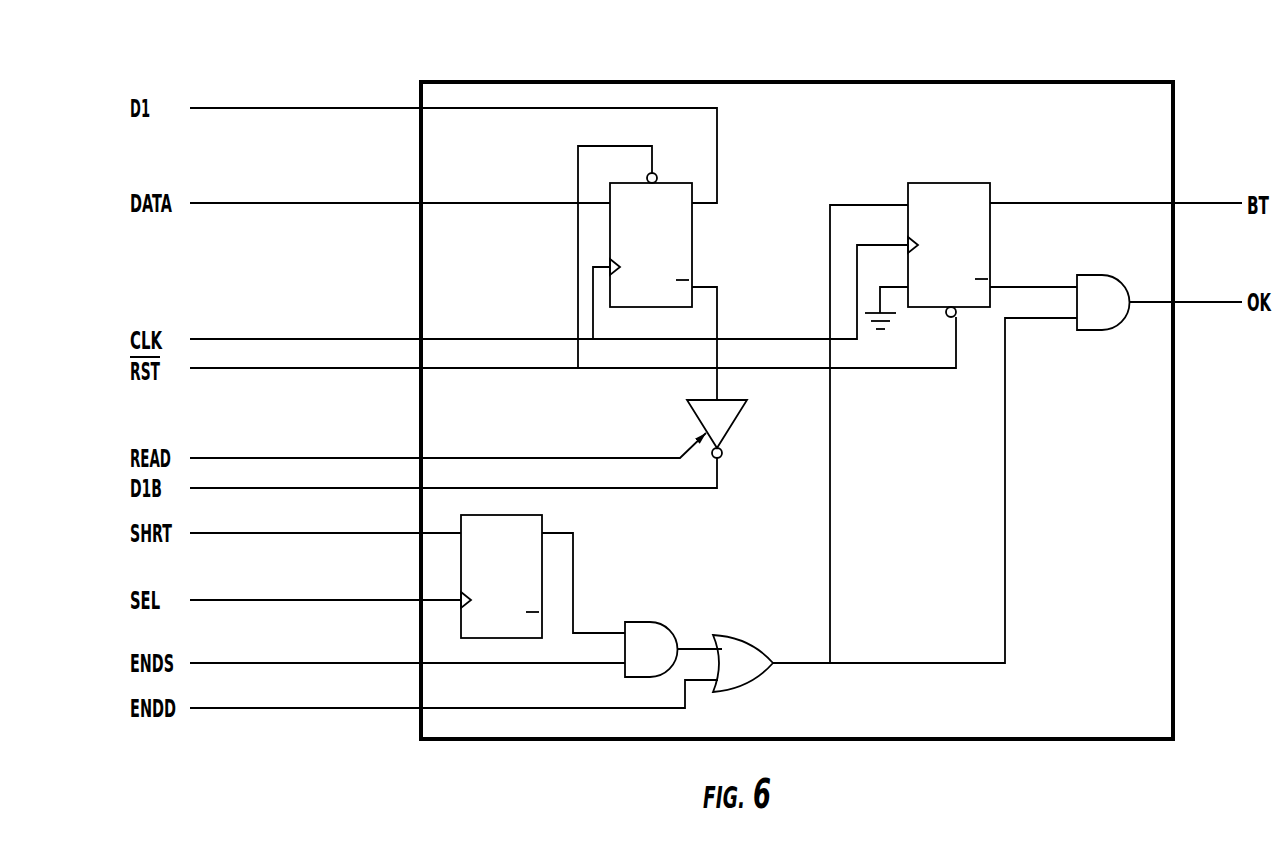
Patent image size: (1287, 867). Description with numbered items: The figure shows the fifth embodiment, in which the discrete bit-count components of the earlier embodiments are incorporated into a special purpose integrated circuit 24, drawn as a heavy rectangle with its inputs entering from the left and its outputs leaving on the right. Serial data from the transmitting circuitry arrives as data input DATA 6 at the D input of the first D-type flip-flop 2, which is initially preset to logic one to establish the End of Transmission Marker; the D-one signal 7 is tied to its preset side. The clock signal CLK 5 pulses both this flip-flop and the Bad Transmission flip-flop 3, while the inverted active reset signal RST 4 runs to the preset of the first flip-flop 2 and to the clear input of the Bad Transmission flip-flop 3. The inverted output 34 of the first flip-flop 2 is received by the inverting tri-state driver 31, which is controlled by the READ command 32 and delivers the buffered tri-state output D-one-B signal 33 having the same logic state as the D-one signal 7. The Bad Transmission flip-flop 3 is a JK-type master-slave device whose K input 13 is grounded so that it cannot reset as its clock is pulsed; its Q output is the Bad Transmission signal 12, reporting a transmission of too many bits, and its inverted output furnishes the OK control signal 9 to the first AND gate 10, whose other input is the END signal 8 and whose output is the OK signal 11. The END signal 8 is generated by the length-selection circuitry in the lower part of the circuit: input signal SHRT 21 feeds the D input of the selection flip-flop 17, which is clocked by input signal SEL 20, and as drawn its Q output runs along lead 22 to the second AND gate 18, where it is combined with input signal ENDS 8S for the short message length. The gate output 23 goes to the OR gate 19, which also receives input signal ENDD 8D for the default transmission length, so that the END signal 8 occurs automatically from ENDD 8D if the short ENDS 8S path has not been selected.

The special purpose integrated circuit 24 is at (816, 80).
The D1 signal 7 is at (335, 112).
The data input DATA 6 is at (330, 208).
The clock signal CLK 5 is at (316, 337).
The inverted active reset signal RST 4 is at (313, 371).
The D-type flip-flop FF0 2 is at (696, 246).
The inverted output 34 is at (721, 322).
The JK-type master-slave Bad Transmission flip-flop FFBT 3 is at (948, 180).
The FFBT K input 13 is at (887, 281).
The OK control signal 9 is at (1022, 284).
The AND gate G1 10 is at (1092, 271).
The OK signal 11 is at (1210, 296).
The Bad Transmission (BT) signal 12 is at (1210, 197).
The READ command 32 is at (270, 452).
The tri-state driver 31 is at (737, 420).
The D1B signal 33 is at (362, 490).
The input signal SHRT 21 is at (345, 538).
The input signal SEL 20 is at (324, 603).
The D-type flip-flop FFSEL 17 is at (458, 618).
The output line of flip-flop FFSEL 22 is at (578, 545).
The input signal ENDS 8S is at (243, 659).
The input signal ENDD 8D is at (385, 713).
The AND gate G2 18 is at (638, 617).
The output line of AND gate G2 23 is at (688, 644).
The OR gate G3 19 is at (748, 632).
The END signal 8 is at (902, 667).